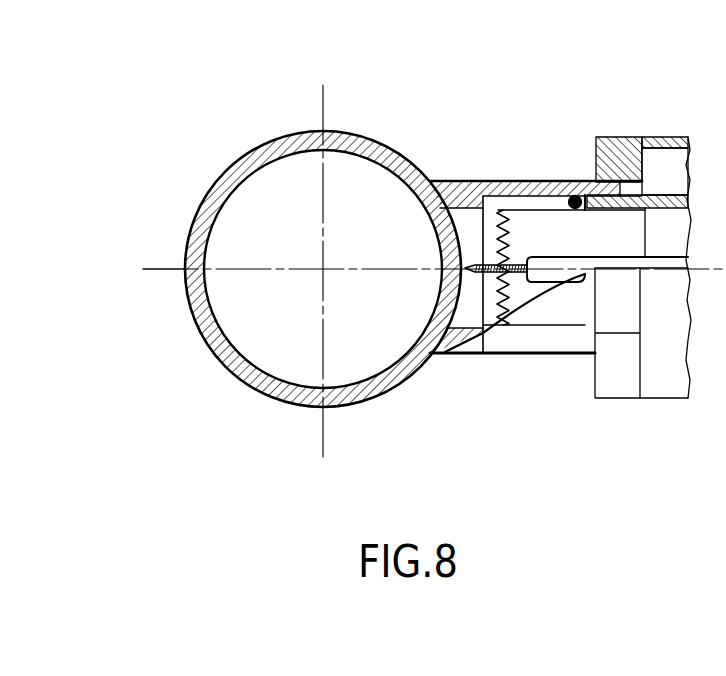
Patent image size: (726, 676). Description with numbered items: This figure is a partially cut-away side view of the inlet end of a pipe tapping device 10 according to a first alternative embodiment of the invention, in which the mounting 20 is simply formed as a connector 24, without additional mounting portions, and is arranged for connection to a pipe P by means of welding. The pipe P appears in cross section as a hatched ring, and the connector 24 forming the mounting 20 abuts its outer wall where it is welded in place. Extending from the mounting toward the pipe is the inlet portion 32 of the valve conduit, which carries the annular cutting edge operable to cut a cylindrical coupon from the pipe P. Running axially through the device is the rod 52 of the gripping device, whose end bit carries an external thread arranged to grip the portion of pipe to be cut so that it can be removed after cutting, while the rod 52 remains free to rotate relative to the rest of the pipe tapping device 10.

The pipe tapping device 10 is at (170, 163).
The pipe P is at (270, 139).
The mounting 20 is at (444, 168).
The connector 24 is at (465, 194).
The inlet portion 32 is at (487, 307).
The rod 52 is at (547, 275).